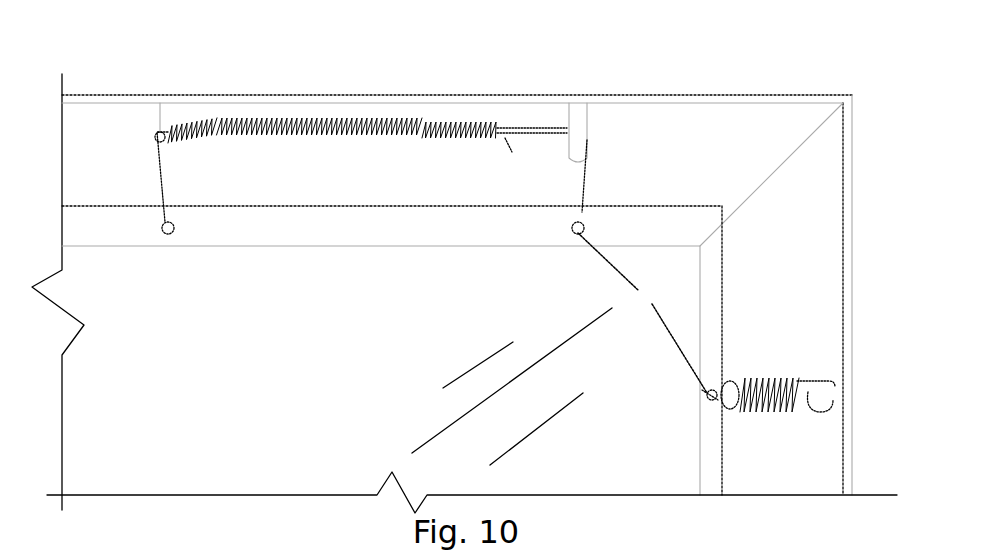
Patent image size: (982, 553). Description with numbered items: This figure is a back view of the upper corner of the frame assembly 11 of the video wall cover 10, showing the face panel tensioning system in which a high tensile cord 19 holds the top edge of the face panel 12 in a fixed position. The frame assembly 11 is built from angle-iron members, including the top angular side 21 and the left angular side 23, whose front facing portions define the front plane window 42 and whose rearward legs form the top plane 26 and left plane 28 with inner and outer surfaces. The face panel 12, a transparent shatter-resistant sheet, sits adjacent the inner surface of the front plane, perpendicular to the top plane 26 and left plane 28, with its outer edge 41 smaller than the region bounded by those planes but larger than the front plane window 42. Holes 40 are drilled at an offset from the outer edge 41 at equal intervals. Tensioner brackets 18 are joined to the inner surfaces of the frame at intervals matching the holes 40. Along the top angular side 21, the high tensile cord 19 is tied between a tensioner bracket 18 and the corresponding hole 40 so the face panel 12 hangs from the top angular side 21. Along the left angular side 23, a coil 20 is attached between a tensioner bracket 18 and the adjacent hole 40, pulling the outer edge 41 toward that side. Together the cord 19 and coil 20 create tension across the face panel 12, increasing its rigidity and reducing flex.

The video wall cover 10 is at (98, 76).
The frame assembly 11 is at (828, 94).
The face panel 12 is at (215, 467).
The tensioner bracket 18 is at (167, 123).
The high tensile cord 19 is at (287, 133).
The coil 20 is at (792, 410).
The top angular side 21 is at (528, 117).
The left angular side 23 is at (805, 340).
The top plane 26 is at (185, 95).
The left plane 28 is at (852, 147).
The holes 40 is at (140, 222).
The outer edge 41 is at (293, 205).
The front plane window 42 is at (283, 308).